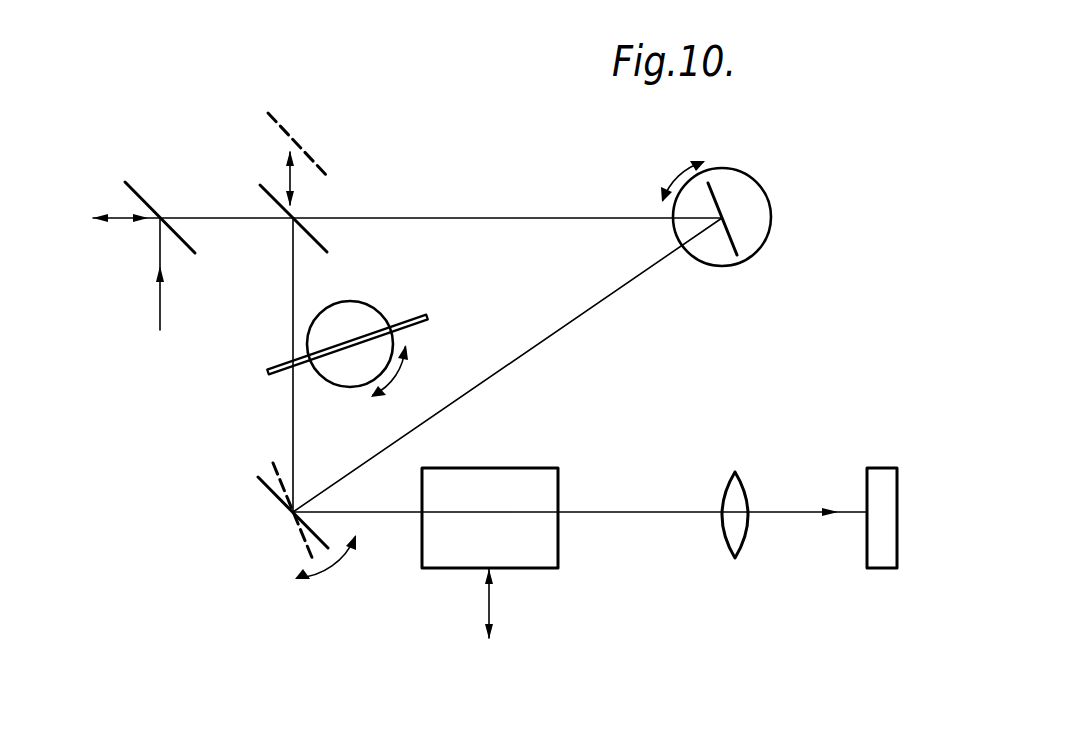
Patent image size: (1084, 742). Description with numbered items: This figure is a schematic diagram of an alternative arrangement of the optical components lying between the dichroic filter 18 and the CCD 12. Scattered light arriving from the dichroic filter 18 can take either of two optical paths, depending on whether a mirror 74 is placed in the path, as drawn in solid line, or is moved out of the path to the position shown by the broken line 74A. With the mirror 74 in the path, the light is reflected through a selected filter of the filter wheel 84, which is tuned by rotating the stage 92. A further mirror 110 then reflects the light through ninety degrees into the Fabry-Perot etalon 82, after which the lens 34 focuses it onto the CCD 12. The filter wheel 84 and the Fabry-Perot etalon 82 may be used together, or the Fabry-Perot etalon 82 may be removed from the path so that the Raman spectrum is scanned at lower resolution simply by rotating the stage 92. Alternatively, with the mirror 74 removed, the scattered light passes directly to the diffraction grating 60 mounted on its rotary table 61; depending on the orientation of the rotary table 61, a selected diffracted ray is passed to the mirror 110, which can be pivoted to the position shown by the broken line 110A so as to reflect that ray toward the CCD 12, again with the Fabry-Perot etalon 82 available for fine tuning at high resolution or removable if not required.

The CCD 12 is at (885, 468).
The dichroic filter 18 is at (136, 188).
The lens 34 is at (735, 472).
The diffraction grating 60 is at (715, 191).
The rotary table 61 is at (772, 208).
The mirror 74 is at (261, 184).
The broken line position of mirror 74A is at (292, 128).
The Fabry-Perot etalon 82 is at (507, 468).
The filter wheel 84 is at (278, 363).
The stage 92 is at (374, 302).
The mirror 110 is at (258, 477).
The broken line position of mirror 110A is at (303, 540).